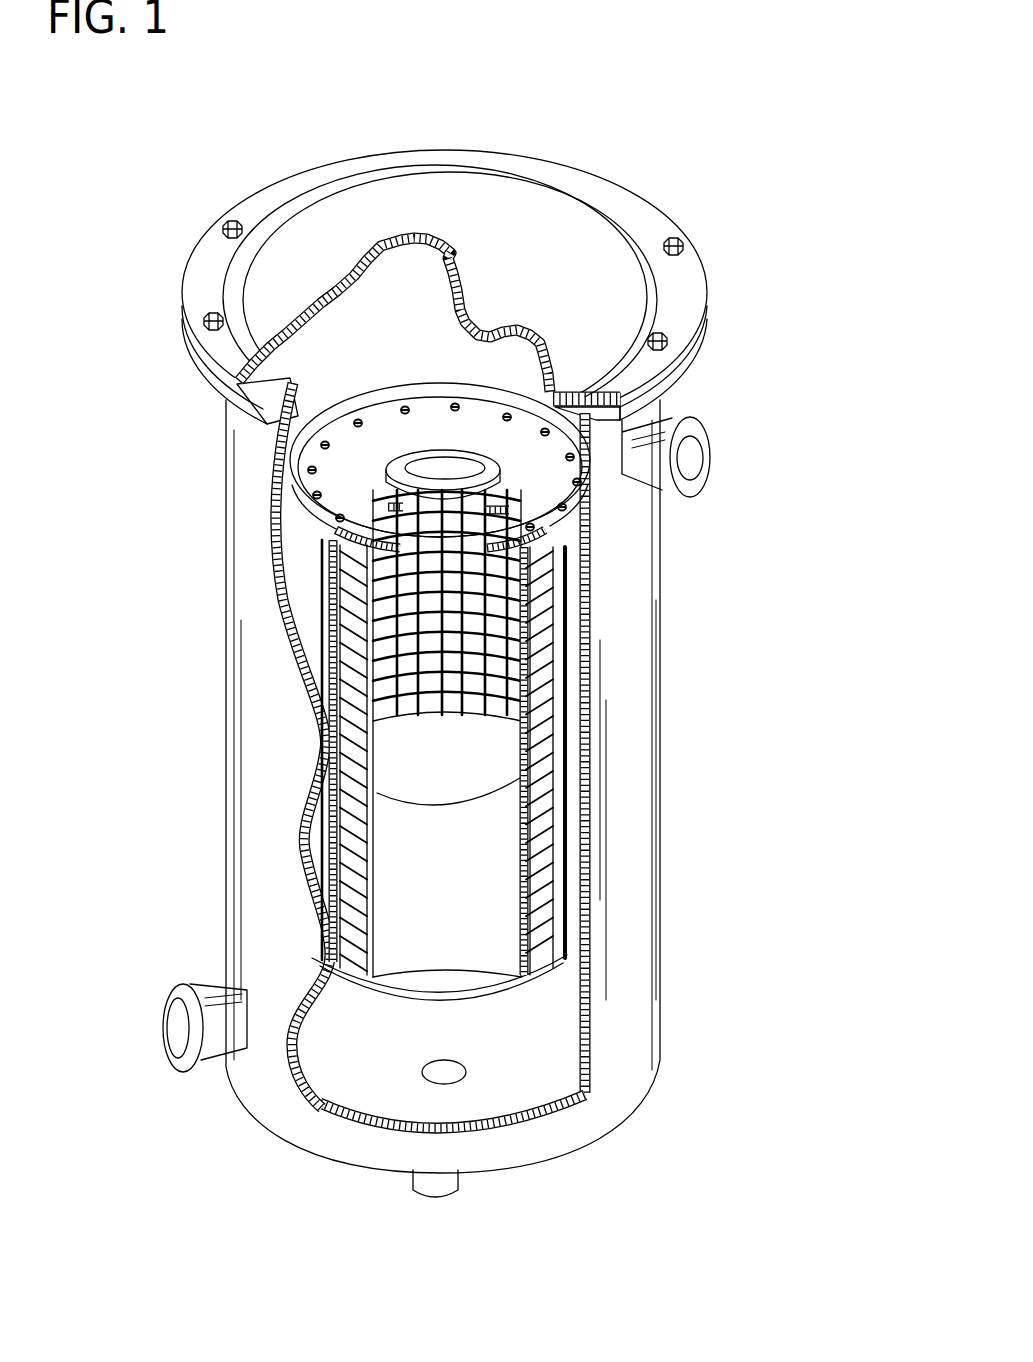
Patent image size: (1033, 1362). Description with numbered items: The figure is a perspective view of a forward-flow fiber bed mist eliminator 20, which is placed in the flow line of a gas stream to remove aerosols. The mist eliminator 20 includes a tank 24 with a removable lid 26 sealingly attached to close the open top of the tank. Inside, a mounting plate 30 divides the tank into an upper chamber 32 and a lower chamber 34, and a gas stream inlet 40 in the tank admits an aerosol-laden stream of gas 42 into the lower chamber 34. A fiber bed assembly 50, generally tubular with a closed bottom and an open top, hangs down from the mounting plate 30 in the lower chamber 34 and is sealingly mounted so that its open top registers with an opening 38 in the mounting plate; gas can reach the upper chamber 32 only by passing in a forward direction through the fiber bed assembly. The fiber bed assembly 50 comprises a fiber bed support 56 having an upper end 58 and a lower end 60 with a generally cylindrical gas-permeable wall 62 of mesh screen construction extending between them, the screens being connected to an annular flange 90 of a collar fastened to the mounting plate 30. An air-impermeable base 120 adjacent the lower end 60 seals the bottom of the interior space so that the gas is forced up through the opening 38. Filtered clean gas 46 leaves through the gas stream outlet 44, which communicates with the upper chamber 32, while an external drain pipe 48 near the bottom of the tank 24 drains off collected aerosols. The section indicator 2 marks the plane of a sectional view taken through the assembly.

The mist eliminator 20 is at (740, 224).
The removable lid 26 is at (203, 274).
The mounting plate 30 is at (233, 370).
The upper chamber 32 is at (357, 362).
The opening 38 is at (443, 475).
The upper end 58 is at (370, 505).
The annular flange 90 is at (520, 497).
The lower chamber 34 is at (303, 607).
The tank 24 is at (223, 697).
The gas-permeable wall 62 is at (330, 797).
The fiber bed support 56 is at (582, 662).
The base 120 is at (457, 804).
The fiber bed assembly 50 is at (538, 991).
The lower end 60 is at (375, 969).
The gas stream inlet 40 is at (182, 982).
The stream of gas 42 is at (167, 1033).
The gas stream outlet 44 is at (693, 412).
The clean gas 46 is at (693, 467).
The external drain pipe 48 is at (433, 1187).
The section line 2 is at (490, 363).